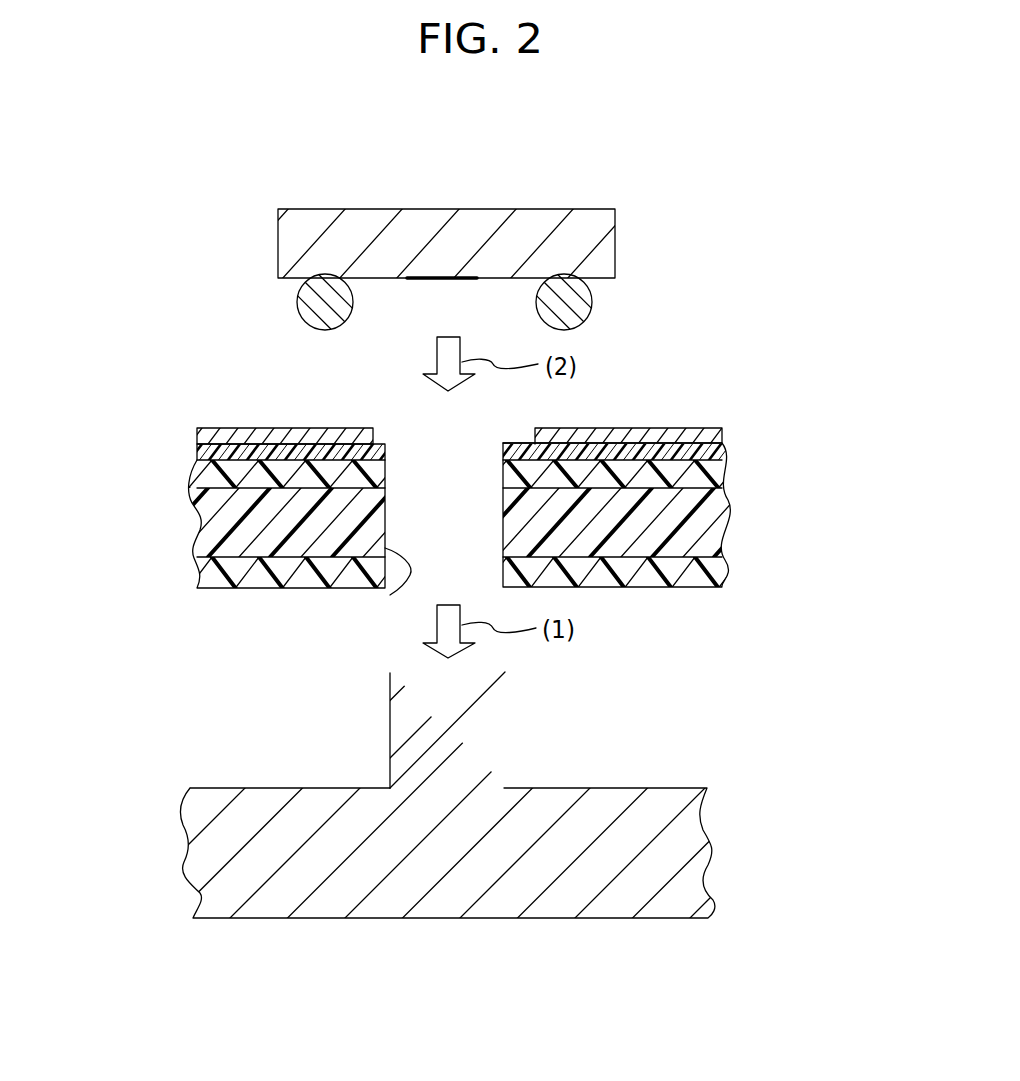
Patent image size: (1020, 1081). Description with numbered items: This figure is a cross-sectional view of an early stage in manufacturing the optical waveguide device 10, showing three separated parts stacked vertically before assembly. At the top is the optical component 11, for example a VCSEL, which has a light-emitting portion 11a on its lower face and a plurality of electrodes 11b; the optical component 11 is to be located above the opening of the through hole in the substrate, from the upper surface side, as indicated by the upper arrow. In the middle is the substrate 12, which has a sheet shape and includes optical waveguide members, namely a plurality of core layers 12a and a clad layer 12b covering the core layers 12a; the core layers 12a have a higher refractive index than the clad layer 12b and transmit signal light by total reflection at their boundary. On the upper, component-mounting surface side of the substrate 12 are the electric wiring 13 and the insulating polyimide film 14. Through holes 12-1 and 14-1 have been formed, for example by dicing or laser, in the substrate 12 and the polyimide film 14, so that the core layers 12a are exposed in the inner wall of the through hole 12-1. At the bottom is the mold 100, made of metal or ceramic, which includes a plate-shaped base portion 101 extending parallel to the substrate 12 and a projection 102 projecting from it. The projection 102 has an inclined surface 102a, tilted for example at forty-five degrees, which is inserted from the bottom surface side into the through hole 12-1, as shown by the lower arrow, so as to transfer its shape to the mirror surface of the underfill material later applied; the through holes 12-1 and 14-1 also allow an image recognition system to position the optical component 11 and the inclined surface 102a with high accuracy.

The optical waveguide device 10 is at (484, 541).
The optical component 11 is at (616, 247).
The light-emitting portion 11a is at (463, 280).
The electrodes 11b is at (305, 298).
The substrate 12 is at (490, 515).
The core layers 12a is at (700, 572).
The clad layer 12b is at (693, 557).
The through hole 12-1 is at (390, 595).
The electric wiring 13 is at (205, 437).
The polyimide film 14 is at (200, 457).
The through hole 14-1 is at (508, 445).
The mold 100 is at (526, 795).
The base portion 101 is at (607, 792).
The projection 102 is at (390, 735).
The inclined surface 102a is at (452, 720).